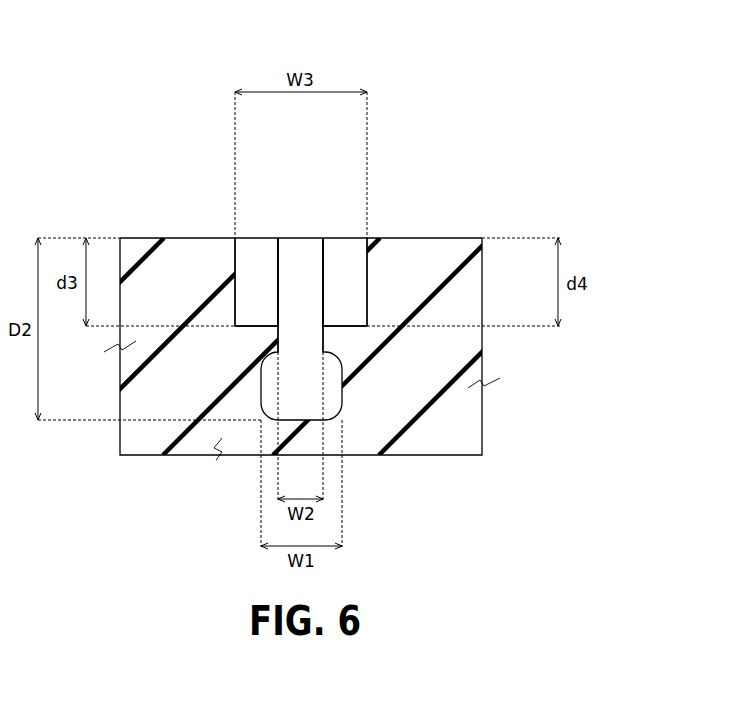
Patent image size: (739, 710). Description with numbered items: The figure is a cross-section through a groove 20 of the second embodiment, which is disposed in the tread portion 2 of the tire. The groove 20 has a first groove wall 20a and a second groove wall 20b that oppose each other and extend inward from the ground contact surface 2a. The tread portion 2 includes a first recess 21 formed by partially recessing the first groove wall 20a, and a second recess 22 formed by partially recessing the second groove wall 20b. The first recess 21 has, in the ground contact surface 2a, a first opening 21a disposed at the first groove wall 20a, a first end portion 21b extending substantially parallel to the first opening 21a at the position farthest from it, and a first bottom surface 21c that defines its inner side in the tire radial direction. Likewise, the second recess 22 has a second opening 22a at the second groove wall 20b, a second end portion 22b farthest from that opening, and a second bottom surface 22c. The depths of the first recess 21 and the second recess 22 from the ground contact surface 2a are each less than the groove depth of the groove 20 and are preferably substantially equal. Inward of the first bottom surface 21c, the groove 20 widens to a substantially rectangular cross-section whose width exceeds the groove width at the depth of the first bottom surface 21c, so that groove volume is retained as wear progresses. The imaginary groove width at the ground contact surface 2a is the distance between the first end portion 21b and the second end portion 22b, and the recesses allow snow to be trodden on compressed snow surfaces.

The tread portion 2 is at (458, 145).
The ground contact surface 2a is at (464, 235).
The groove 20 is at (298, 283).
The first groove wall 20a is at (284, 265).
The second groove wall 20b is at (319, 262).
The first recess 21 is at (233, 234).
The first opening 21a is at (257, 255).
The first end portion 21b is at (234, 238).
The first bottom surface 21c is at (257, 322).
The second recess 22 is at (346, 255).
The second opening 22a is at (326, 235).
The second end portion 22b is at (369, 237).
The second bottom surface 22c is at (353, 322).